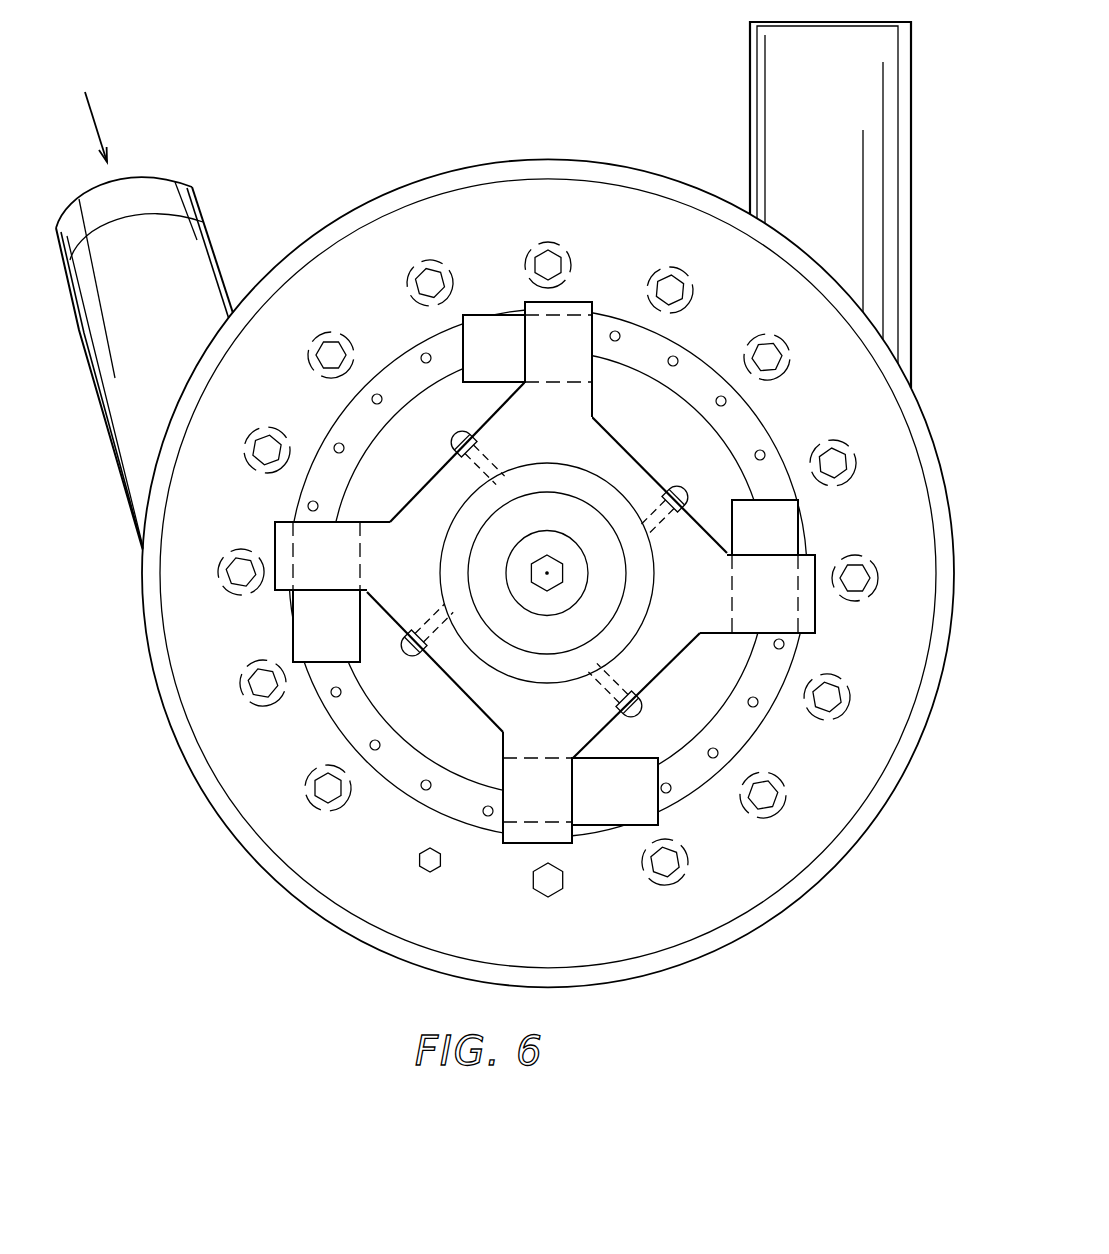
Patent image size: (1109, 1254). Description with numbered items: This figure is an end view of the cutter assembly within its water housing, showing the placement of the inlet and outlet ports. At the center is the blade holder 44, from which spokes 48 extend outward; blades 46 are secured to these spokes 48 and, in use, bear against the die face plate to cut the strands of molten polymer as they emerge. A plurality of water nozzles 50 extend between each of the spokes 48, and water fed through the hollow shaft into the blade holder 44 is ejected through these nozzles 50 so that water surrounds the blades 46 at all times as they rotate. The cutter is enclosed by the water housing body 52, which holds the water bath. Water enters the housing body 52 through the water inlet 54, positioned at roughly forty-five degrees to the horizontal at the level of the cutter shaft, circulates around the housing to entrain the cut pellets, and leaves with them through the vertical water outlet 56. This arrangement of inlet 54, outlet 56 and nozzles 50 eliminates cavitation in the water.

The blade holder 44 is at (500, 703).
The blades 46 is at (505, 327).
The spokes 48 is at (282, 543).
The water nozzles 50 is at (455, 432).
The water housing body 52 is at (595, 162).
The water inlet 54 is at (157, 222).
The water outlet 56 is at (780, 52).